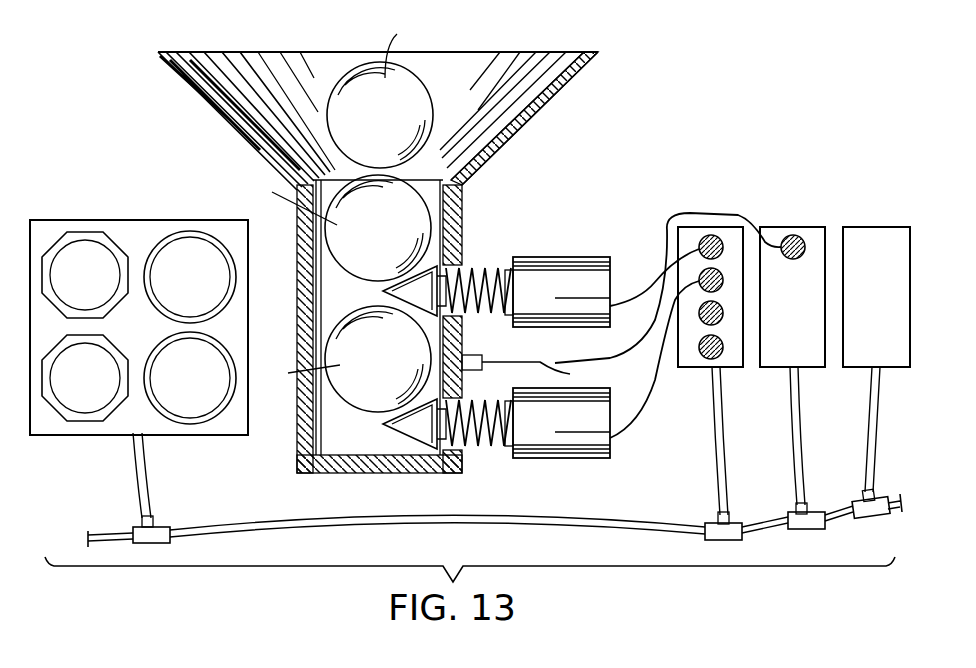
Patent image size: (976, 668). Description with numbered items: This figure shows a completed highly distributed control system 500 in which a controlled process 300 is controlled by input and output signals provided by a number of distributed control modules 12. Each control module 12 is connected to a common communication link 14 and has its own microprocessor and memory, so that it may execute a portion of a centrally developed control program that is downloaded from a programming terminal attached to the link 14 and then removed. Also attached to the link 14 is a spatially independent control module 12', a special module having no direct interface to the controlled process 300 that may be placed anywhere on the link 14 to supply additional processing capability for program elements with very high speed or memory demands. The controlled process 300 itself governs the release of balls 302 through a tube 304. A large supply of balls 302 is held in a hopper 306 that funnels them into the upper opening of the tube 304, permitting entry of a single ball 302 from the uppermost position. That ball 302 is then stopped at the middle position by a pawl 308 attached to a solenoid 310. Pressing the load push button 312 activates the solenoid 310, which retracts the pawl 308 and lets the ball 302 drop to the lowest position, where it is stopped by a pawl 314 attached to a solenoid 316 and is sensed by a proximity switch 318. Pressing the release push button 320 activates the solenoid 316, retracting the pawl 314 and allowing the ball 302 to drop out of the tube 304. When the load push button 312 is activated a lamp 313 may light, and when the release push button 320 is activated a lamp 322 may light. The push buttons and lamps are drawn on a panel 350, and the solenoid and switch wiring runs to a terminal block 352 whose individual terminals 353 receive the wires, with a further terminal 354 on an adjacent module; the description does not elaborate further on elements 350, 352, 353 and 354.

The control module 12 is at (443, 320).
The spatially independent control module 12' is at (877, 330).
The communication link 14 is at (255, 533).
The controlled process 300 is at (587, 145).
The balls 302 is at (398, 127).
The tube 304 is at (463, 210).
The hopper 306 is at (200, 90).
The pawl 308 is at (437, 264).
The solenoid 310 is at (584, 257).
The load push button 312 is at (87, 233).
The lamp 313 is at (237, 272).
The pawl 314 is at (413, 428).
The solenoid 316 is at (567, 450).
The proximity switch 318 is at (555, 362).
The release push button 320 is at (87, 423).
The lamp 322 is at (235, 362).
The control panel 350 is at (152, 337).
The terminal block 352 is at (737, 368).
The terminals 353 is at (705, 362).
The terminal 354 is at (803, 236).
The highly distributed control system 500 is at (750, 84).